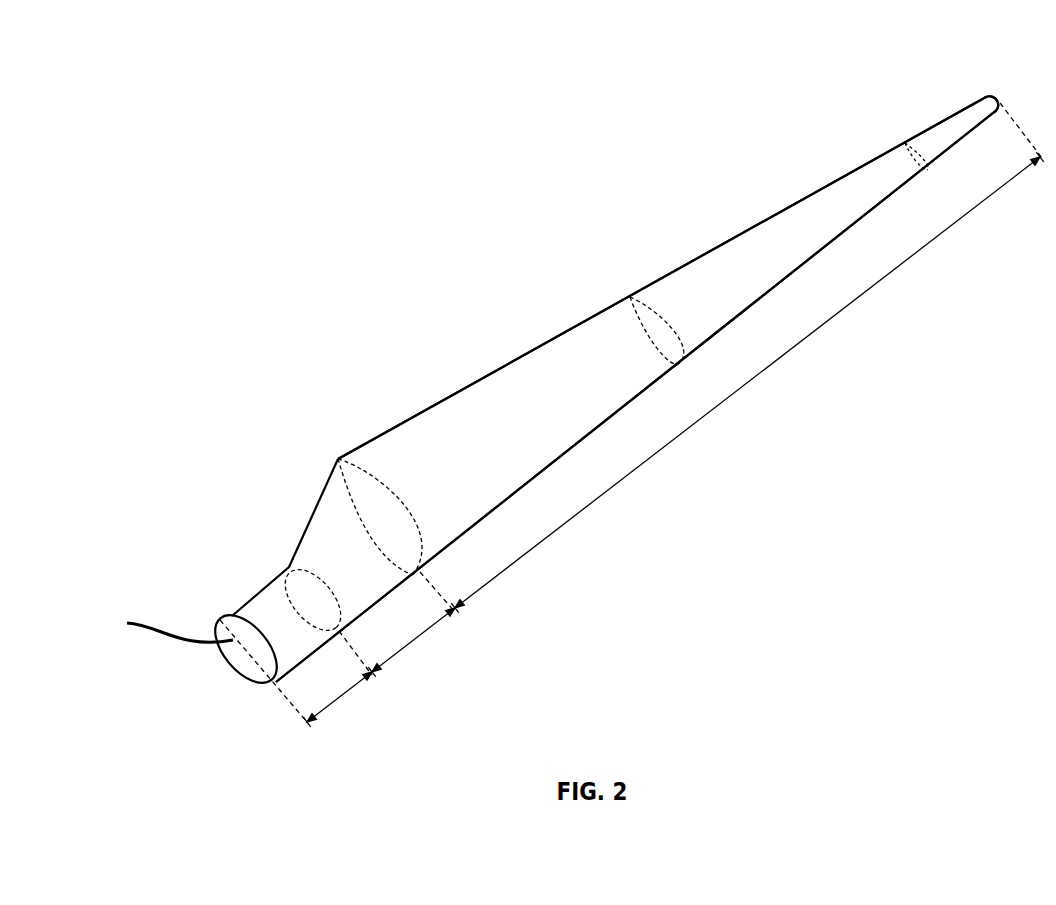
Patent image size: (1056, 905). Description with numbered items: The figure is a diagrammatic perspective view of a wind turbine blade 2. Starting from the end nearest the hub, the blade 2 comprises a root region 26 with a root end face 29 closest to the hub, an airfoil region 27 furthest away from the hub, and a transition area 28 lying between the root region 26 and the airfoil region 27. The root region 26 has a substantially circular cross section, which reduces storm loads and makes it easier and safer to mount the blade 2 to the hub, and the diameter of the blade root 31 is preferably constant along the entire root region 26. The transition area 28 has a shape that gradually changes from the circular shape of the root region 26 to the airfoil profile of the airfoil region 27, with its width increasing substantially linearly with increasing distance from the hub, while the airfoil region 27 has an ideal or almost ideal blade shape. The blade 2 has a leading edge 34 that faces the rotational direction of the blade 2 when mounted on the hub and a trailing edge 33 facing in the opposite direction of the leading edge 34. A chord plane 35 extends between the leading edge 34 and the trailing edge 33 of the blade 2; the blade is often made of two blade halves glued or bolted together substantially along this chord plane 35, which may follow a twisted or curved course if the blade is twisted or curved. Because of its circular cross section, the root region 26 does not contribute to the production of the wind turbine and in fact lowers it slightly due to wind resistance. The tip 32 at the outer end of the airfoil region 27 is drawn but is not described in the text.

The blade 2 is at (487, 314).
The root region 26 is at (340, 698).
The airfoil region 27 is at (748, 383).
The transition area 28 is at (423, 636).
The root end face 29 is at (233, 630).
The blade root 31 is at (250, 647).
The blade tip 32 is at (973, 117).
The trailing edge 33 is at (565, 330).
The leading edge 34 is at (615, 418).
The chord plane 35 is at (153, 625).